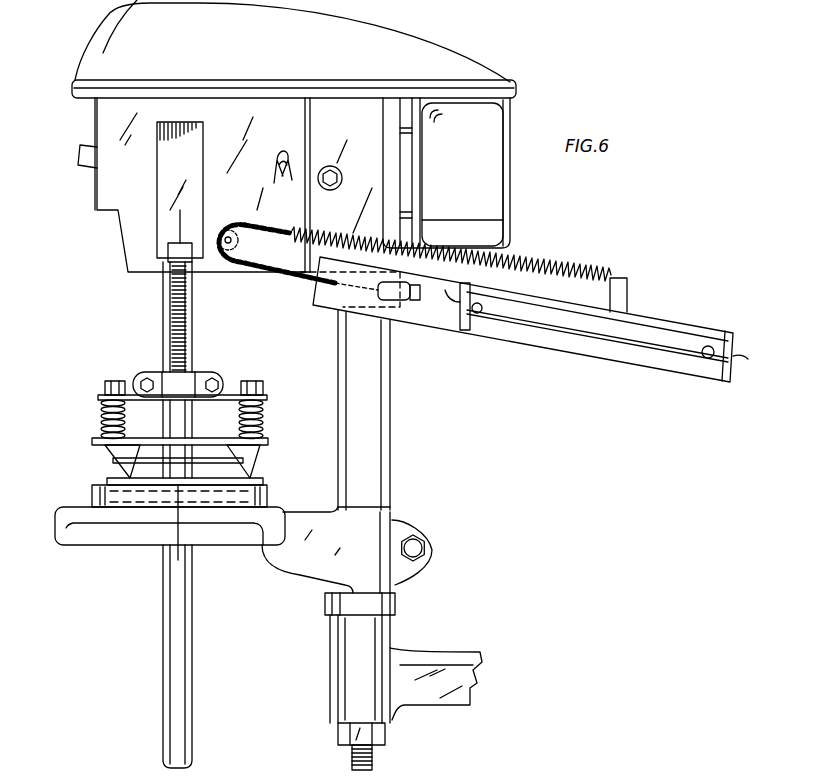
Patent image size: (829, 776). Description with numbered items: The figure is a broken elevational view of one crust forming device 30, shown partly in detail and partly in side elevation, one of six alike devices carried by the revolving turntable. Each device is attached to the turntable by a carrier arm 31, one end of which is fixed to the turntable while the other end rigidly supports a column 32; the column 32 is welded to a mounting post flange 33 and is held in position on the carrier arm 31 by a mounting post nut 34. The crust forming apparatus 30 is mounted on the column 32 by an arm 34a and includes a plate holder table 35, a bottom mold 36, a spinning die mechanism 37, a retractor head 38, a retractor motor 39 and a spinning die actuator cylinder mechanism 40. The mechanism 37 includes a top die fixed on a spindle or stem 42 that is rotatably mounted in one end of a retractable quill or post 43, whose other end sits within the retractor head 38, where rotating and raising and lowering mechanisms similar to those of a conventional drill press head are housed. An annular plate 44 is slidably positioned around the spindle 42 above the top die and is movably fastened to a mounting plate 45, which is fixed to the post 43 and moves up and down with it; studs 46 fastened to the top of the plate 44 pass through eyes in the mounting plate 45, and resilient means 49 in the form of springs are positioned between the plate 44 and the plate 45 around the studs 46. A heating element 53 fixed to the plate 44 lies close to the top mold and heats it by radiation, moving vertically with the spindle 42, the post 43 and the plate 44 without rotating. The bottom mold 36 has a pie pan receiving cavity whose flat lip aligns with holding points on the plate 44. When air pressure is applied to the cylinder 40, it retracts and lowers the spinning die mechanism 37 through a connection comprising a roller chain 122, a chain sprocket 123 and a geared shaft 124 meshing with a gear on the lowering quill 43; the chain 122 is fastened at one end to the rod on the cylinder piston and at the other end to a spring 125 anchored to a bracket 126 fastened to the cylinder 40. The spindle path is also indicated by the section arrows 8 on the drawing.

The crust forming device 30 is at (493, 45).
The retractor head 38 is at (275, 56).
The retractor motor 39 is at (508, 118).
The spindle 8 is at (178, 228).
The geared shaft 124 is at (228, 237).
The chain sprocket 123 is at (245, 247).
The roller chain 122 is at (287, 273).
The spring 125 is at (547, 270).
The bracket 126 is at (626, 278).
The spinning die actuator cylinder mechanism 40 is at (680, 272).
The retractable quill or post 43 is at (193, 320).
The mounting plate 45 is at (128, 372).
The studs 46 is at (112, 382).
The resilient means 49 is at (100, 400).
The spinning die mechanism 37 is at (100, 426).
The spindle or stem 42 is at (195, 432).
The annular plate 44 is at (90, 446).
The heating element 53 is at (250, 470).
The bottom mold 36 is at (268, 494).
The column 32 is at (393, 420).
The plate holder table 35 is at (62, 545).
The arm 34a is at (288, 578).
The mounting post flange 33 is at (397, 608).
The carrier arm 31 is at (478, 655).
The mounting post nut 34 is at (338, 736).